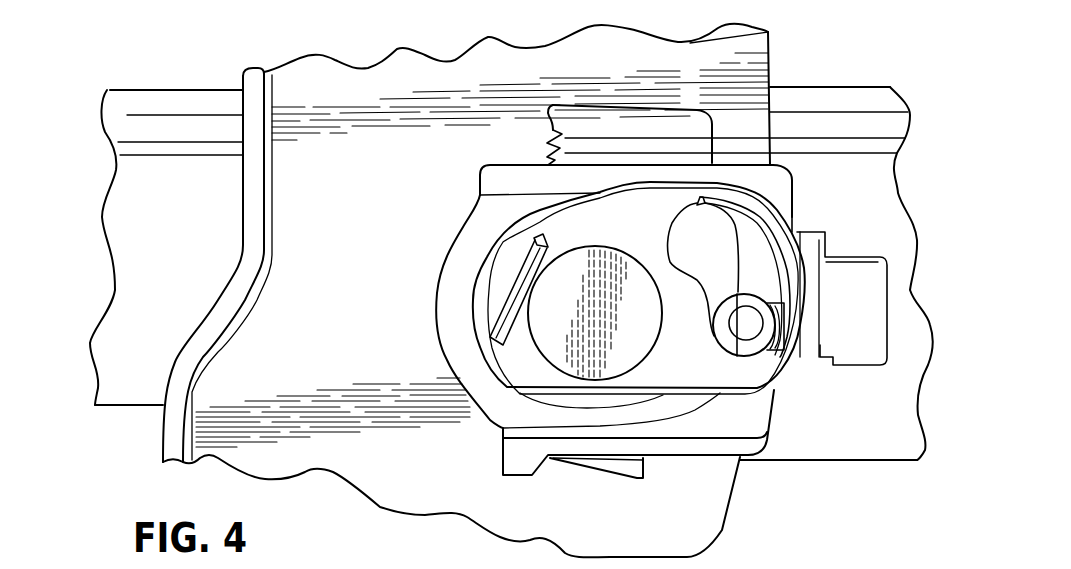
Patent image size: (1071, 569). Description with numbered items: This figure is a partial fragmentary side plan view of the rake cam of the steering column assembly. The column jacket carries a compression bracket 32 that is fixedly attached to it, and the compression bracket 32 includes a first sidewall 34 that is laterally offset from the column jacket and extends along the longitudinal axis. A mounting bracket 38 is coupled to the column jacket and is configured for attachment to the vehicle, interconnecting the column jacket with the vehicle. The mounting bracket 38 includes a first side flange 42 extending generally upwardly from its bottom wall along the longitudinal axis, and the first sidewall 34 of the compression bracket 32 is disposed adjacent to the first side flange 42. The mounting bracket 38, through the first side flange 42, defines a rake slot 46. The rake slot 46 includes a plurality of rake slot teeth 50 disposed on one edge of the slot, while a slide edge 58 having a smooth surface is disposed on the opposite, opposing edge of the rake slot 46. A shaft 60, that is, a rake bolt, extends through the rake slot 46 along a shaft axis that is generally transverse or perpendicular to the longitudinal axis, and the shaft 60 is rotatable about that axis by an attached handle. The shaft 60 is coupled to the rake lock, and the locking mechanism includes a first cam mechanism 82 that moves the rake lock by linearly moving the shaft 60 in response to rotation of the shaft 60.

The compression bracket 32 is at (127, 128).
The first sidewall 34 is at (860, 210).
The mounting bracket 38 is at (740, 40).
The first side flange 42 is at (308, 157).
The rake slot 46 is at (595, 108).
The rake slot teeth 50 is at (548, 133).
The slide edge 58 is at (815, 358).
The shaft 60 is at (550, 317).
The first cam mechanism 82 is at (773, 363).